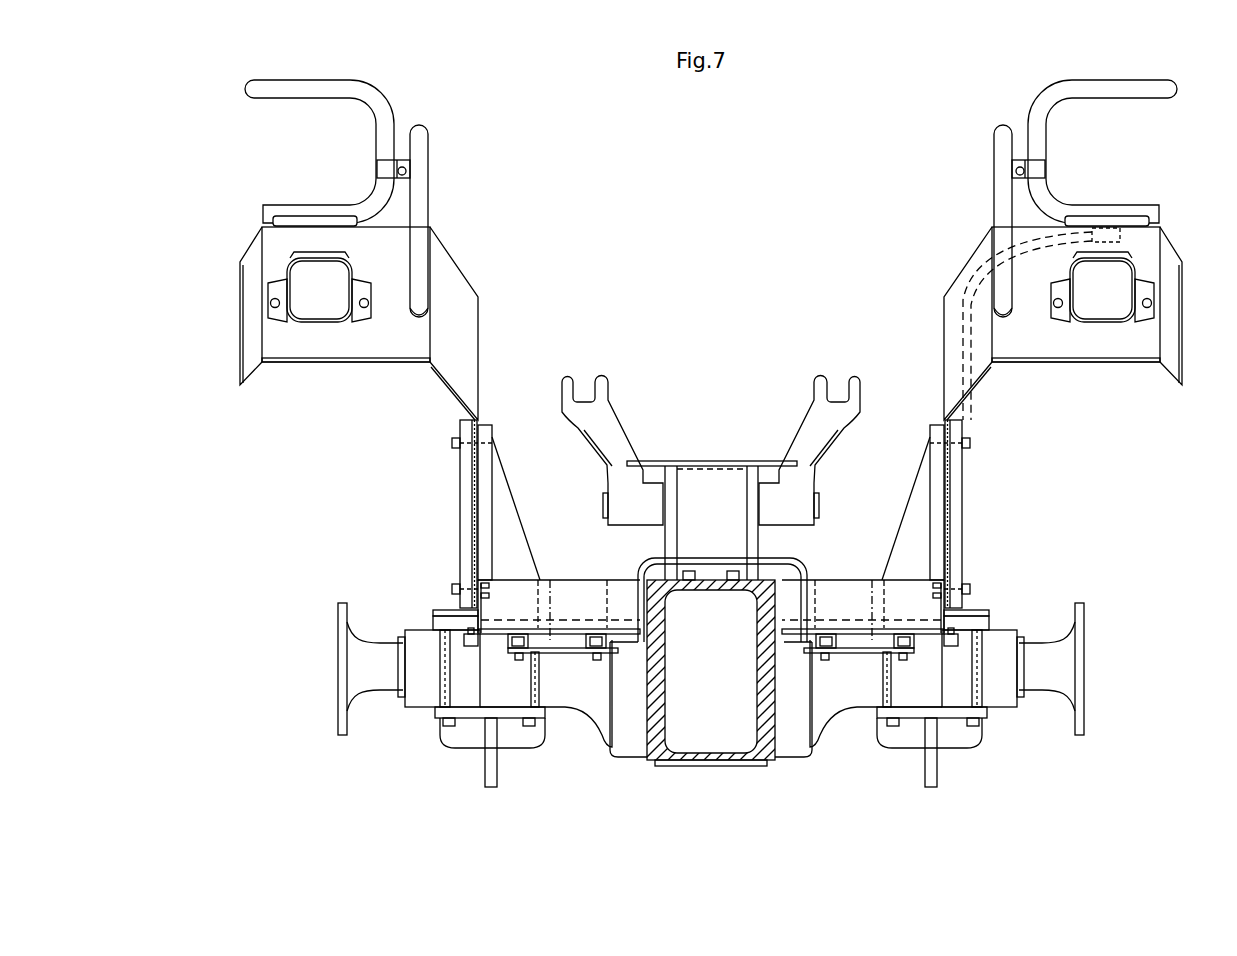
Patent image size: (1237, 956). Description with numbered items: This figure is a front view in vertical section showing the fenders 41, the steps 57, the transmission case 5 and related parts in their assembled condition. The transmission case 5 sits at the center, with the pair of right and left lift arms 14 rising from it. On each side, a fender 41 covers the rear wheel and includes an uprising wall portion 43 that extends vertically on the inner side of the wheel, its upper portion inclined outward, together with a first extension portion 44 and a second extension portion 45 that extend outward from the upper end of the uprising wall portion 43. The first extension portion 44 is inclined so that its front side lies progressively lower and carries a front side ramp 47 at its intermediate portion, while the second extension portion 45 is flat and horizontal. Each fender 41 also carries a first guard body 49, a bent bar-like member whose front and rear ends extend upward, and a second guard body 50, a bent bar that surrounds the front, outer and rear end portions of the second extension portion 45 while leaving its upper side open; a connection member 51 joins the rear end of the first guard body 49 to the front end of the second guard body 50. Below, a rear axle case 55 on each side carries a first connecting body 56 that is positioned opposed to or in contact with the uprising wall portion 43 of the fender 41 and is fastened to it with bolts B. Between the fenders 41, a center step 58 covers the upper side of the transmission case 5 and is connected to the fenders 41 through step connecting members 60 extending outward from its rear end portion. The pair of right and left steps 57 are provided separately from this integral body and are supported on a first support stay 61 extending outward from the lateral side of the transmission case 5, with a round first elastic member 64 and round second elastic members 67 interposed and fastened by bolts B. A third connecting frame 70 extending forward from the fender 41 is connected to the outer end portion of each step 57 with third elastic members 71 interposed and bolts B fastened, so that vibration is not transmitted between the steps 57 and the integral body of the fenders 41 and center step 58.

The transmission case 5 is at (775, 765).
The lift arms 14 is at (568, 378).
The fenders 41 is at (488, 293).
The uprising wall portion 43 is at (460, 517).
The first extension portion 44 is at (400, 356).
The second extension portion 45 is at (398, 227).
The front side ramp 47 is at (318, 325).
The first guard body 49 is at (428, 145).
The second guard body 50 is at (283, 95).
The connection member 51 is at (377, 171).
The rear axle case 55 is at (418, 700).
The first connecting bodies 56 is at (488, 490).
The steps 57 is at (580, 628).
The center step 58 is at (780, 560).
The step connecting members 60 is at (550, 580).
The first support stay 61 is at (565, 655).
The first elastic member 64 is at (920, 656).
The second elastic member 67 is at (516, 650).
The third connecting frame 70 is at (437, 612).
The third elastic members 71 is at (474, 646).
The bolt B is at (452, 443).